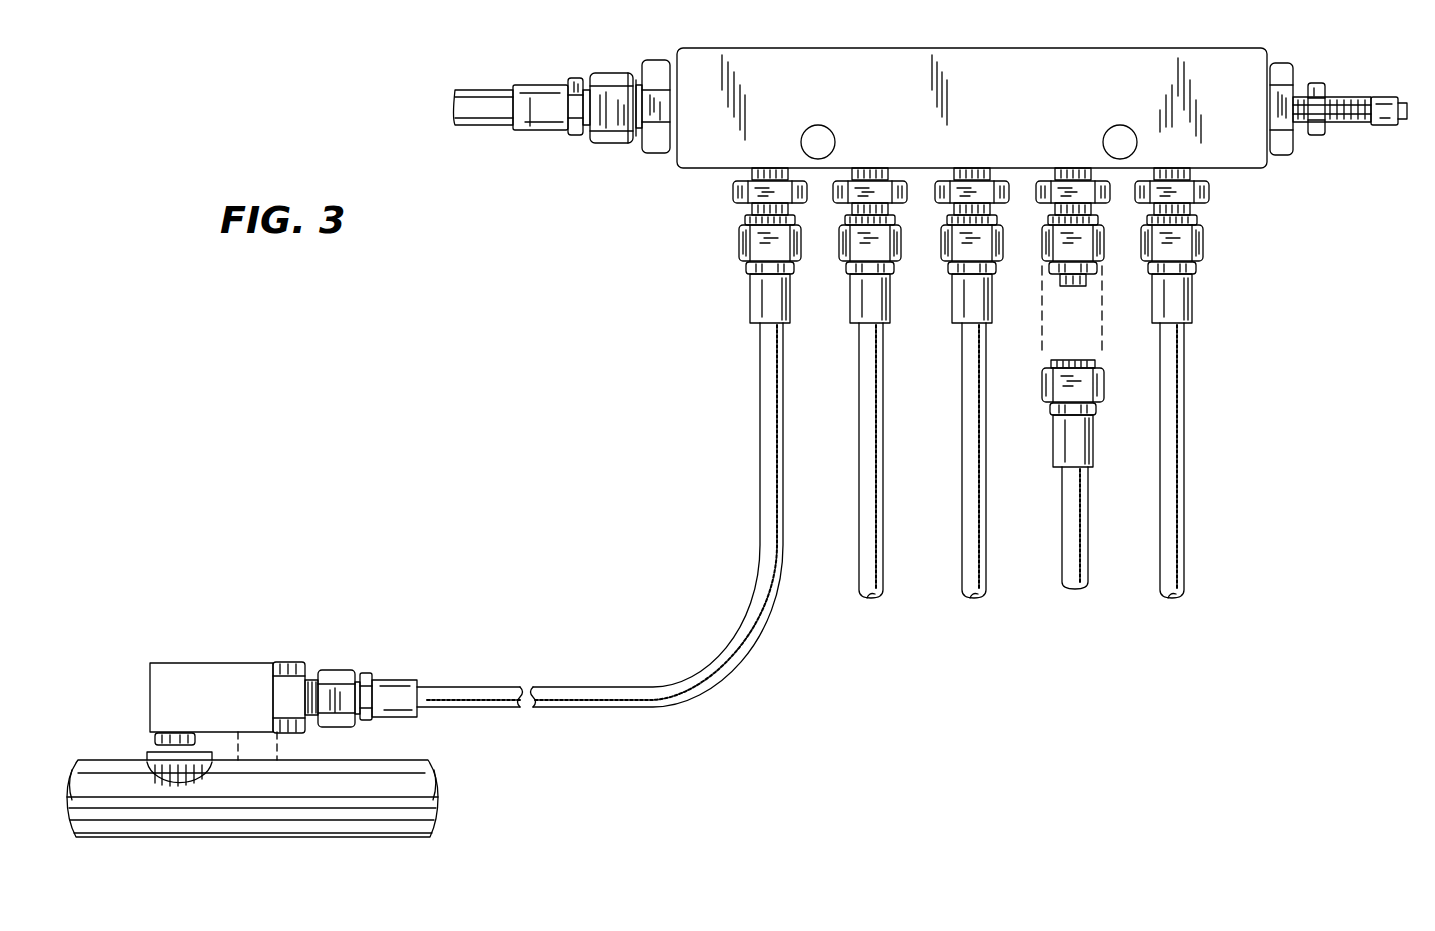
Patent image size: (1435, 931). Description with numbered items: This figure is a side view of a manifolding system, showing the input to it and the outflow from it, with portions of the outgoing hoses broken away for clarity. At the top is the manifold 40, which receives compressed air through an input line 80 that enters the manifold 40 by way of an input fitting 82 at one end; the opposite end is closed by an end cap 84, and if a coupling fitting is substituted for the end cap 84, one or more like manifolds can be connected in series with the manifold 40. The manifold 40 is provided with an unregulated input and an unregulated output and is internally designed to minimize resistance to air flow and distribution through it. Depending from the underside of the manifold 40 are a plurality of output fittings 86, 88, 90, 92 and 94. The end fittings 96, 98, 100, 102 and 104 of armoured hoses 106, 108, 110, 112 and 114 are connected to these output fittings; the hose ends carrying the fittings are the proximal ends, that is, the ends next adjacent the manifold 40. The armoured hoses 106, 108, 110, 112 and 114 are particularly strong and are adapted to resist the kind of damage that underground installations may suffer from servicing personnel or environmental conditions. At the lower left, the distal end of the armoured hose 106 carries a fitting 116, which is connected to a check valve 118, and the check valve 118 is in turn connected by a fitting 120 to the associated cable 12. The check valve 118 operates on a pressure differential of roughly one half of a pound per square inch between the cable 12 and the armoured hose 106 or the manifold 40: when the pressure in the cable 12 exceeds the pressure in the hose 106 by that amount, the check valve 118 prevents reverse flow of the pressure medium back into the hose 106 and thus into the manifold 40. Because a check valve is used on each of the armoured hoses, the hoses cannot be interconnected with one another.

The cable 12 is at (116, 775).
The manifold 40 is at (916, 39).
The input line 80 is at (484, 100).
The input fitting 82 is at (609, 76).
The end cap 84 is at (1280, 62).
The output fitting 86 is at (789, 246).
The output fitting 88 is at (889, 246).
The output fitting 90 is at (991, 246).
The output fitting 92 is at (1093, 246).
The output fitting 94 is at (1197, 246).
The end fitting 96 is at (774, 305).
The end fitting 98 is at (874, 305).
The end fitting 100 is at (976, 308).
The end fitting 102 is at (1092, 391).
The end fitting 104 is at (1186, 297).
The armoured hose 106 is at (760, 420).
The armoured hose 108 is at (860, 420).
The armoured hose 110 is at (963, 420).
The armoured hose 112 is at (1067, 492).
The armoured hose 114 is at (1163, 473).
The fitting 116 is at (340, 671).
The check valve 118 is at (232, 676).
The fitting 120 is at (155, 742).